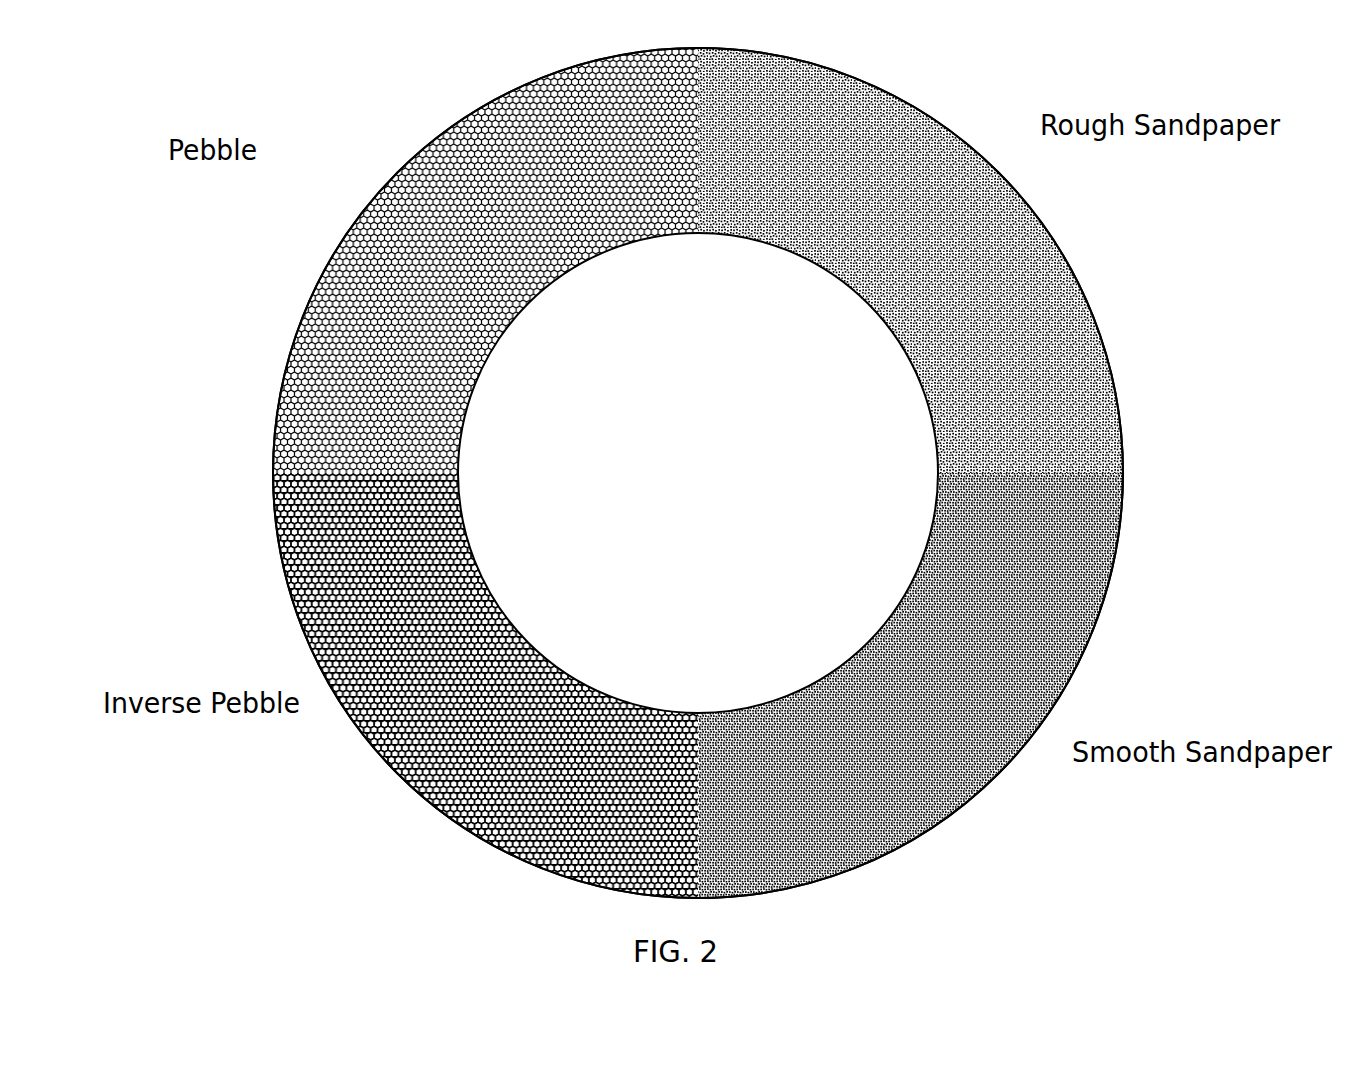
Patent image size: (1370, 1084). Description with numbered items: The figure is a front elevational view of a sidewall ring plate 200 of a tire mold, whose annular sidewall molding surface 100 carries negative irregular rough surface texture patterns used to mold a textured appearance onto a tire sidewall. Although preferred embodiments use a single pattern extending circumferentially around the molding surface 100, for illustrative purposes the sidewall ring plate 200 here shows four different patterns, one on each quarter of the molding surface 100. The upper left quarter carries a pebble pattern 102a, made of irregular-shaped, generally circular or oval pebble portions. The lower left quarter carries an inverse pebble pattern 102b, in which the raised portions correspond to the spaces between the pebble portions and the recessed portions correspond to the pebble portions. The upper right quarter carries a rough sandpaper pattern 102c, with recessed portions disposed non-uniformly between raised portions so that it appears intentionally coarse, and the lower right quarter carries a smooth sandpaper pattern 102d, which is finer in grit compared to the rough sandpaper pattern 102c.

The sidewall molding surface 100 is at (720, 468).
The pebble pattern 102a is at (362, 291).
The inverse pebble pattern 102b is at (409, 720).
The rough sandpaper pattern 102c is at (1064, 276).
The smooth sandpaper pattern 102d is at (955, 772).
The sidewall ring plate 200 is at (1132, 332).